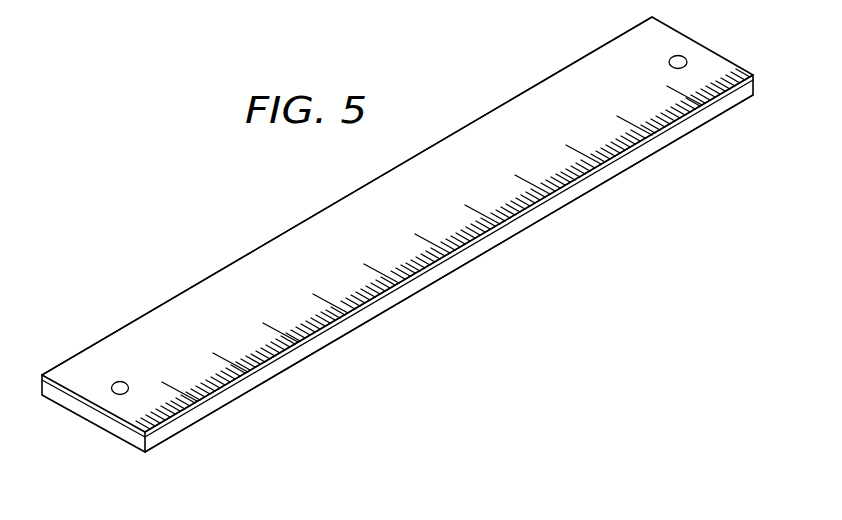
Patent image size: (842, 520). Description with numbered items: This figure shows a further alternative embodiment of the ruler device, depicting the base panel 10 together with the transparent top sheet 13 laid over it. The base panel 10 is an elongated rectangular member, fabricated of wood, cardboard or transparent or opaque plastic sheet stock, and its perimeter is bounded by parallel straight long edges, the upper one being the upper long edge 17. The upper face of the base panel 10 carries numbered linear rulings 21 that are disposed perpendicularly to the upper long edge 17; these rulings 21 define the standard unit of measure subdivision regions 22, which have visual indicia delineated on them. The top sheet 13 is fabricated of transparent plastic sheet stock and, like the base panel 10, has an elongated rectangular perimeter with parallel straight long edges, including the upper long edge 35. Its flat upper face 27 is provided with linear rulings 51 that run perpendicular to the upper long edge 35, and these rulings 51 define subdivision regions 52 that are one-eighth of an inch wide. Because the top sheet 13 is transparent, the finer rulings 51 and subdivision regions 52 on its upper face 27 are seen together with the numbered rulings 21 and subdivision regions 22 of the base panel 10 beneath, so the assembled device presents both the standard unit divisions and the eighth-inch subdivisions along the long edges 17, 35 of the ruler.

The base panel 10 is at (397, 234).
The top sheet 13 is at (513, 217).
The upper long edge 17 is at (375, 298).
The numbered linear rulings 21 is at (277, 325).
The standard unit of measure subdivision regions 22 is at (213, 338).
The upper face 27 is at (297, 252).
The upper long edge 35 is at (597, 168).
The linear rulings 51 is at (195, 388).
The subdivision regions 52 is at (462, 228).